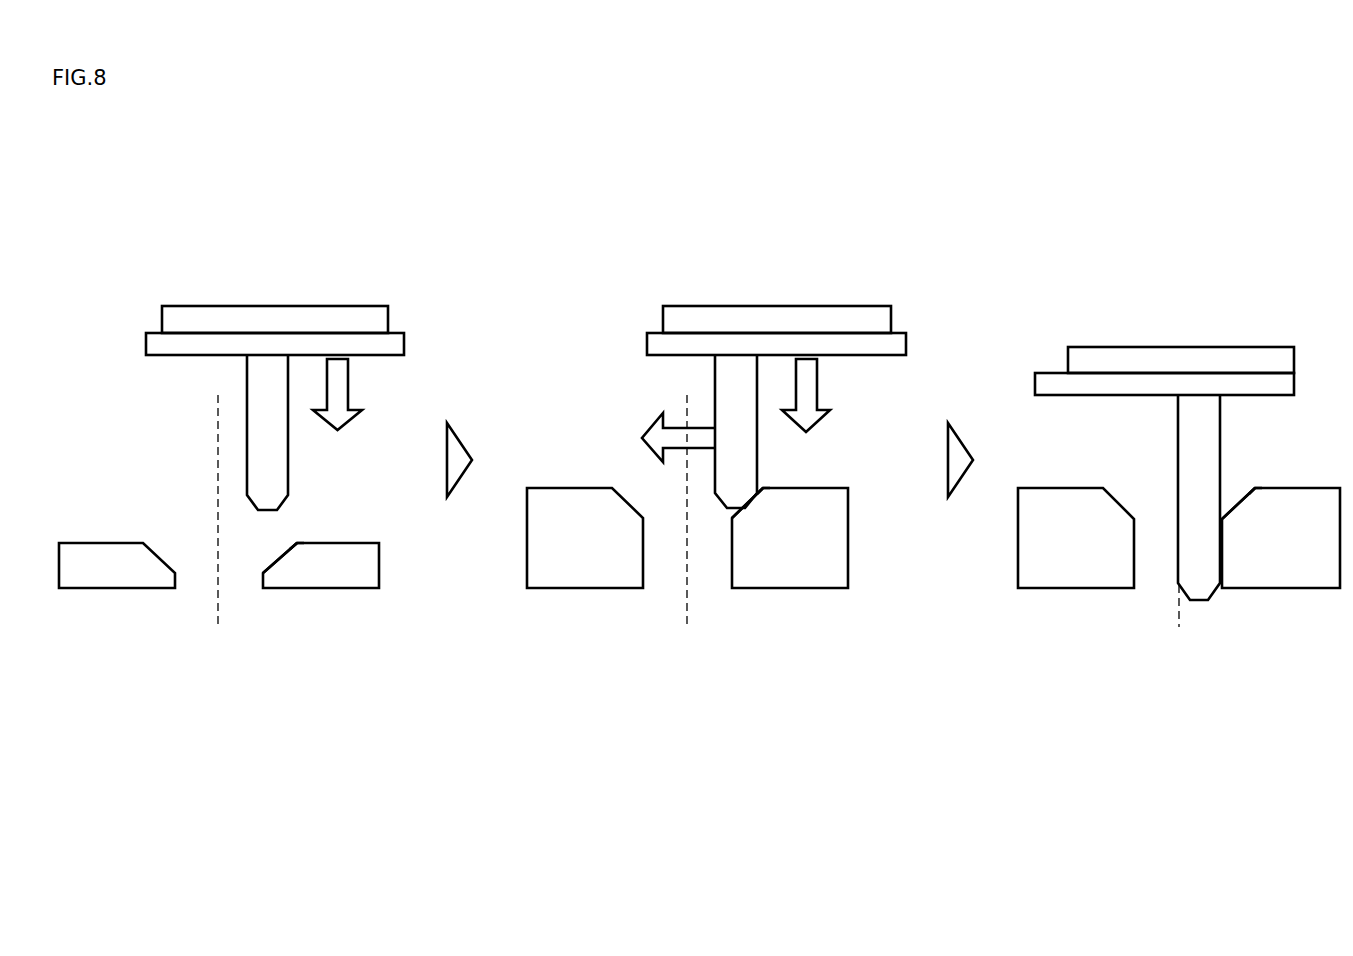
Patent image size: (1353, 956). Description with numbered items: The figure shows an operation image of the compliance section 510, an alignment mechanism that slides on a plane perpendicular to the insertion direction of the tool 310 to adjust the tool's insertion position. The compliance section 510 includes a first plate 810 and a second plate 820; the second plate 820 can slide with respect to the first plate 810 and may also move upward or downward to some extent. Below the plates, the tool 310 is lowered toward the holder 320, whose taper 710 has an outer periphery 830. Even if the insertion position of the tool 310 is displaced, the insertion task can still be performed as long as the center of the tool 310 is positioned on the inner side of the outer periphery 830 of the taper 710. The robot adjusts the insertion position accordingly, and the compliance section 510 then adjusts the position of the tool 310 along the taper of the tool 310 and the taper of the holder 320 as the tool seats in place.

The tool 310 is at (258, 373).
The holder 320 is at (338, 557).
The compliance section 510 is at (748, 305).
The taper 710 is at (273, 565).
The first plate 810 is at (380, 320).
The second plate 820 is at (400, 345).
The outer periphery 830 is at (297, 545).